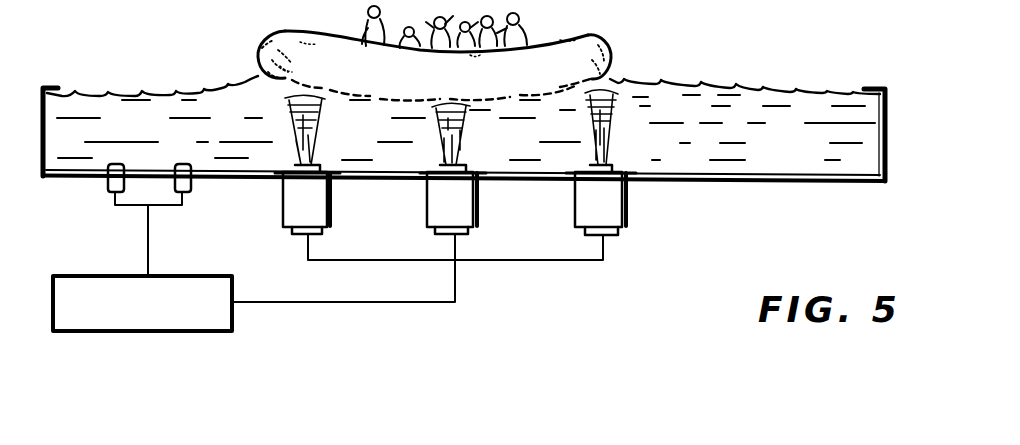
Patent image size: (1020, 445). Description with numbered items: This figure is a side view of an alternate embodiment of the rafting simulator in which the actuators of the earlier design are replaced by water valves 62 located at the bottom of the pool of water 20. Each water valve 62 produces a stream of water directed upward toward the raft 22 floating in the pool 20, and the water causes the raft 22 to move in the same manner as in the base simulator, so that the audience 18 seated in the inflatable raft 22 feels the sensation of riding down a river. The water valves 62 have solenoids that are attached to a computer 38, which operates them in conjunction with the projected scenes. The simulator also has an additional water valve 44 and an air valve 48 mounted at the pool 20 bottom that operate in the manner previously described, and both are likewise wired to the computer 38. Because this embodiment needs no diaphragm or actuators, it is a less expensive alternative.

The audience 18 is at (528, 22).
The pool of water 20 is at (819, 150).
The raft 22 is at (608, 55).
The computer 38 is at (142, 303).
The additional water valve 44 is at (106, 183).
The air valve 48 is at (186, 182).
The water valve 62 is at (630, 213).